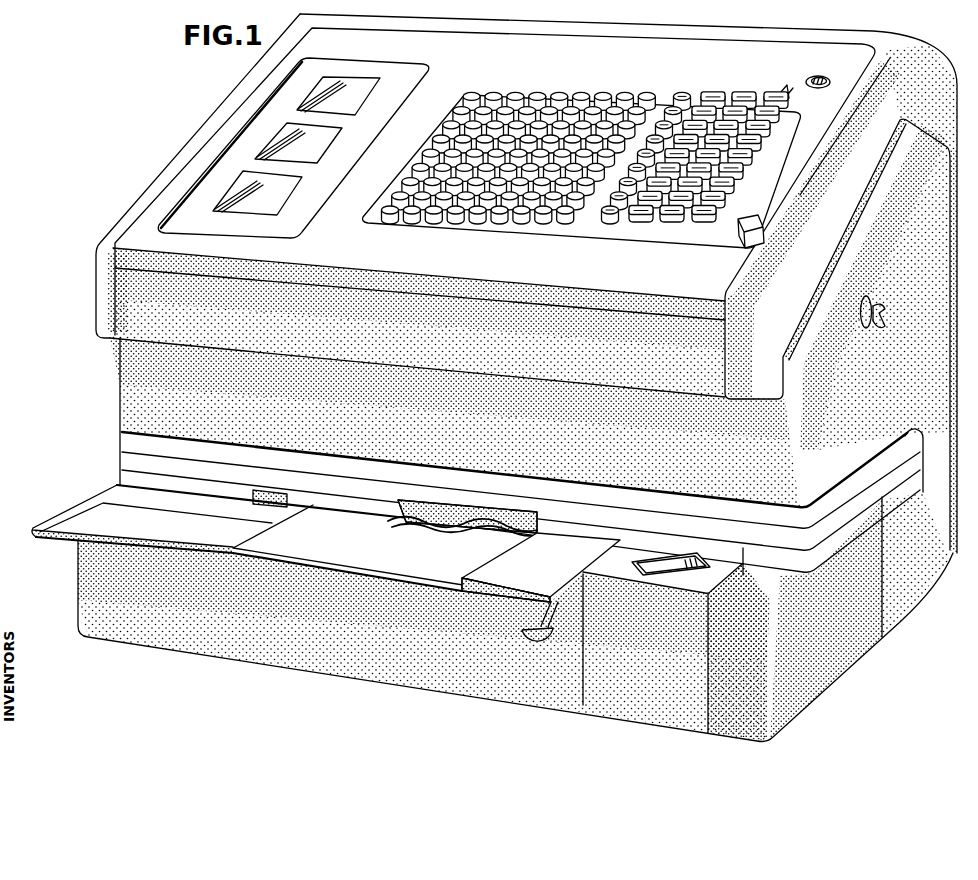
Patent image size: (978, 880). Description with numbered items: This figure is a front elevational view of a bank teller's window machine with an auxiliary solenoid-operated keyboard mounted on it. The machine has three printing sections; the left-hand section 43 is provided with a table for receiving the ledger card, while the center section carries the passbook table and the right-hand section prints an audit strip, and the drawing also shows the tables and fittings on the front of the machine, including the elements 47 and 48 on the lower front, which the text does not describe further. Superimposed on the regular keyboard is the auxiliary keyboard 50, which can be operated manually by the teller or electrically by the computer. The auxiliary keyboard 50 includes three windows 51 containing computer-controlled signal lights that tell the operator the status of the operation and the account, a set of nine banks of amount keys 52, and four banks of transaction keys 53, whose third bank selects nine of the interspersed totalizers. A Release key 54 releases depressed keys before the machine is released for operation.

The left-hand section 43 is at (95, 522).
The printing platen / paper table 47 is at (363, 556).
The card slot 48 is at (712, 572).
The auxiliary keyboard 50 is at (122, 223).
The windows 51 is at (293, 188).
The amount keys 52 is at (517, 94).
The transaction keys 53 is at (714, 100).
The Release key 54 is at (762, 221).